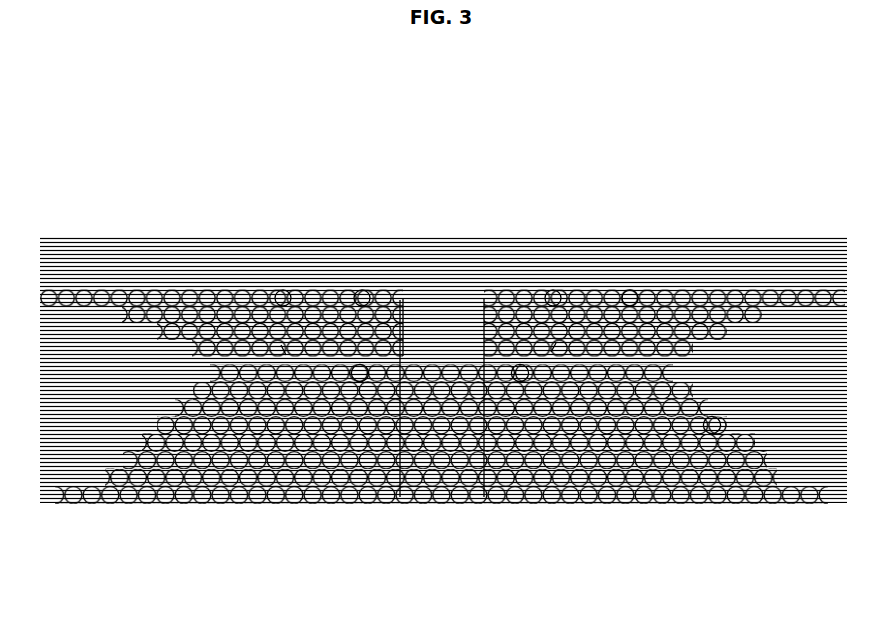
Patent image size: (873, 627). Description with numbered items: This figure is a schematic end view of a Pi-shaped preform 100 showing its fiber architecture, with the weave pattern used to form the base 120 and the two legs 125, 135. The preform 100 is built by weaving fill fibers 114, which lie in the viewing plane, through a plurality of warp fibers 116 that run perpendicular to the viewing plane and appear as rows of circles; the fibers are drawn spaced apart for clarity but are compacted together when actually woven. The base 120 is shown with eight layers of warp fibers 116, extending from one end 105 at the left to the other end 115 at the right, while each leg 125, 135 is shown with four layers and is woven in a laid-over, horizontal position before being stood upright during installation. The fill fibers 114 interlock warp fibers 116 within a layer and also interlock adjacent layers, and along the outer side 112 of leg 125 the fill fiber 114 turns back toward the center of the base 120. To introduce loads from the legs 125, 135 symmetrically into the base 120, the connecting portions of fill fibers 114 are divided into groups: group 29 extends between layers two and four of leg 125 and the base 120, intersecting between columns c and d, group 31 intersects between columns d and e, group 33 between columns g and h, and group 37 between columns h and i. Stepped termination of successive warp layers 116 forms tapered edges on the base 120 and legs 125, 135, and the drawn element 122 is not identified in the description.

The Pi-shaped preform 100 is at (303, 157).
The end of the base 105 is at (159, 424).
The outer side of leg 112 is at (556, 343).
The fill fiber 114 is at (405, 322).
The other end of the base 115 is at (716, 429).
The warp fiber 116 is at (281, 289).
The base 120 is at (608, 479).
The upper layer elements 122 is at (553, 298).
The leg 125 is at (187, 300).
The leg 135 is at (633, 303).
The group of fill fiber portions 29 is at (367, 369).
The group of fill fiber portions 31 is at (410, 398).
The group of fill fiber portions 33 is at (470, 418).
The group of fill fiber portions 37 is at (511, 369).